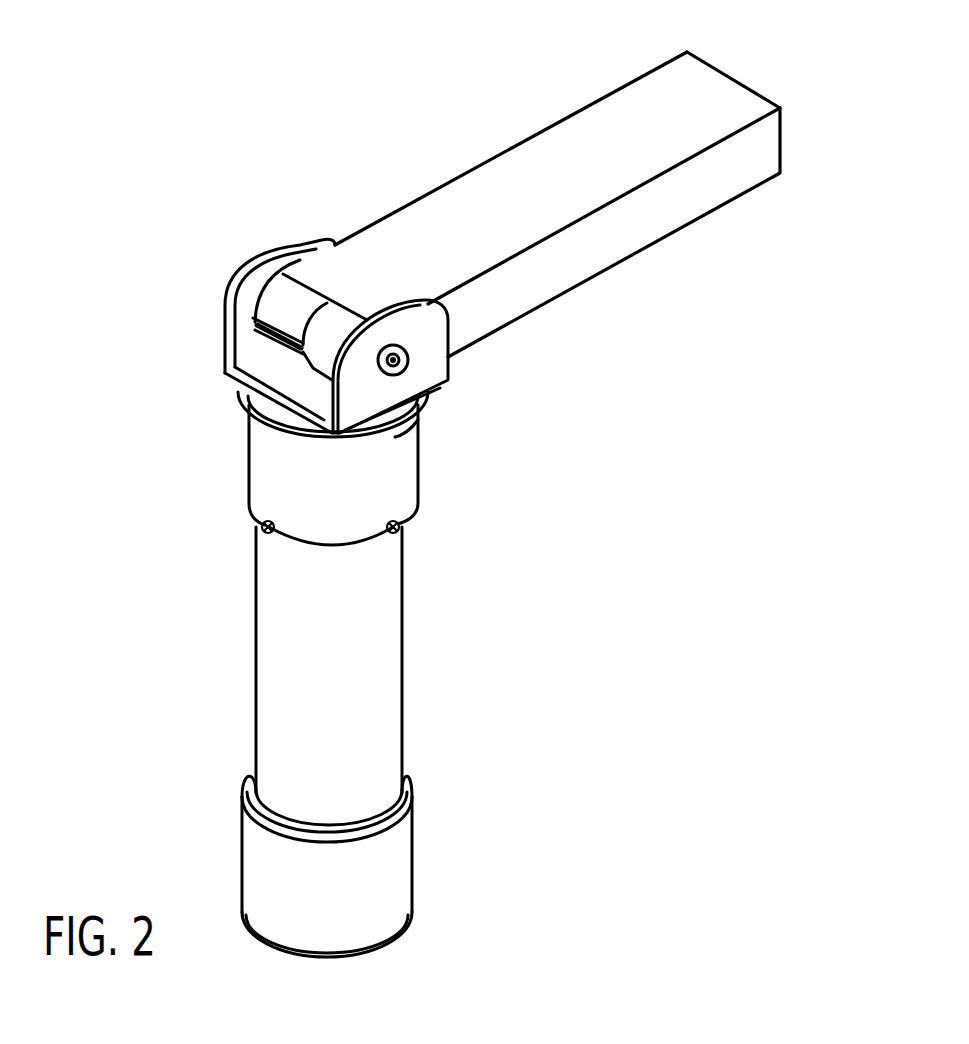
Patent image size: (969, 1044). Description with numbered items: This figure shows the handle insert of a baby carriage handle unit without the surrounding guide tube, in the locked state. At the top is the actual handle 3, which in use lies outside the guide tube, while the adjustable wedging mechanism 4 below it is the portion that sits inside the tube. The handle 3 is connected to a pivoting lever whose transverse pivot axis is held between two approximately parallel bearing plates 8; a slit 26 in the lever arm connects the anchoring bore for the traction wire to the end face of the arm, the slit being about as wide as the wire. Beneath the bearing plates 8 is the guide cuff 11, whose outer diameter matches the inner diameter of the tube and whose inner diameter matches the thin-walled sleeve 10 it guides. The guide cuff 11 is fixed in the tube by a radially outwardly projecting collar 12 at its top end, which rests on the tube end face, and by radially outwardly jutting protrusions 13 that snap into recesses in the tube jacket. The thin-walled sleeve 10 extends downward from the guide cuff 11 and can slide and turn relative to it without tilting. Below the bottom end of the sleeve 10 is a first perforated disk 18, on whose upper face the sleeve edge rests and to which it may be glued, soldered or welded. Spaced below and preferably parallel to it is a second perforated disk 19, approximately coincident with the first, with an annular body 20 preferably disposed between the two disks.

The handle 3 is at (514, 172).
The adjustable wedging mechanism 4 is at (207, 667).
The bearing plates 8 is at (243, 353).
The slit 26 is at (290, 320).
The collar 12 is at (396, 437).
The guide cuff 11 is at (390, 497).
The protrusions 13 is at (400, 527).
The thin-walled sleeve 10 is at (385, 652).
The first perforated disk 18 is at (413, 790).
The annular body 20 is at (388, 860).
The second perforated disk 19 is at (372, 945).